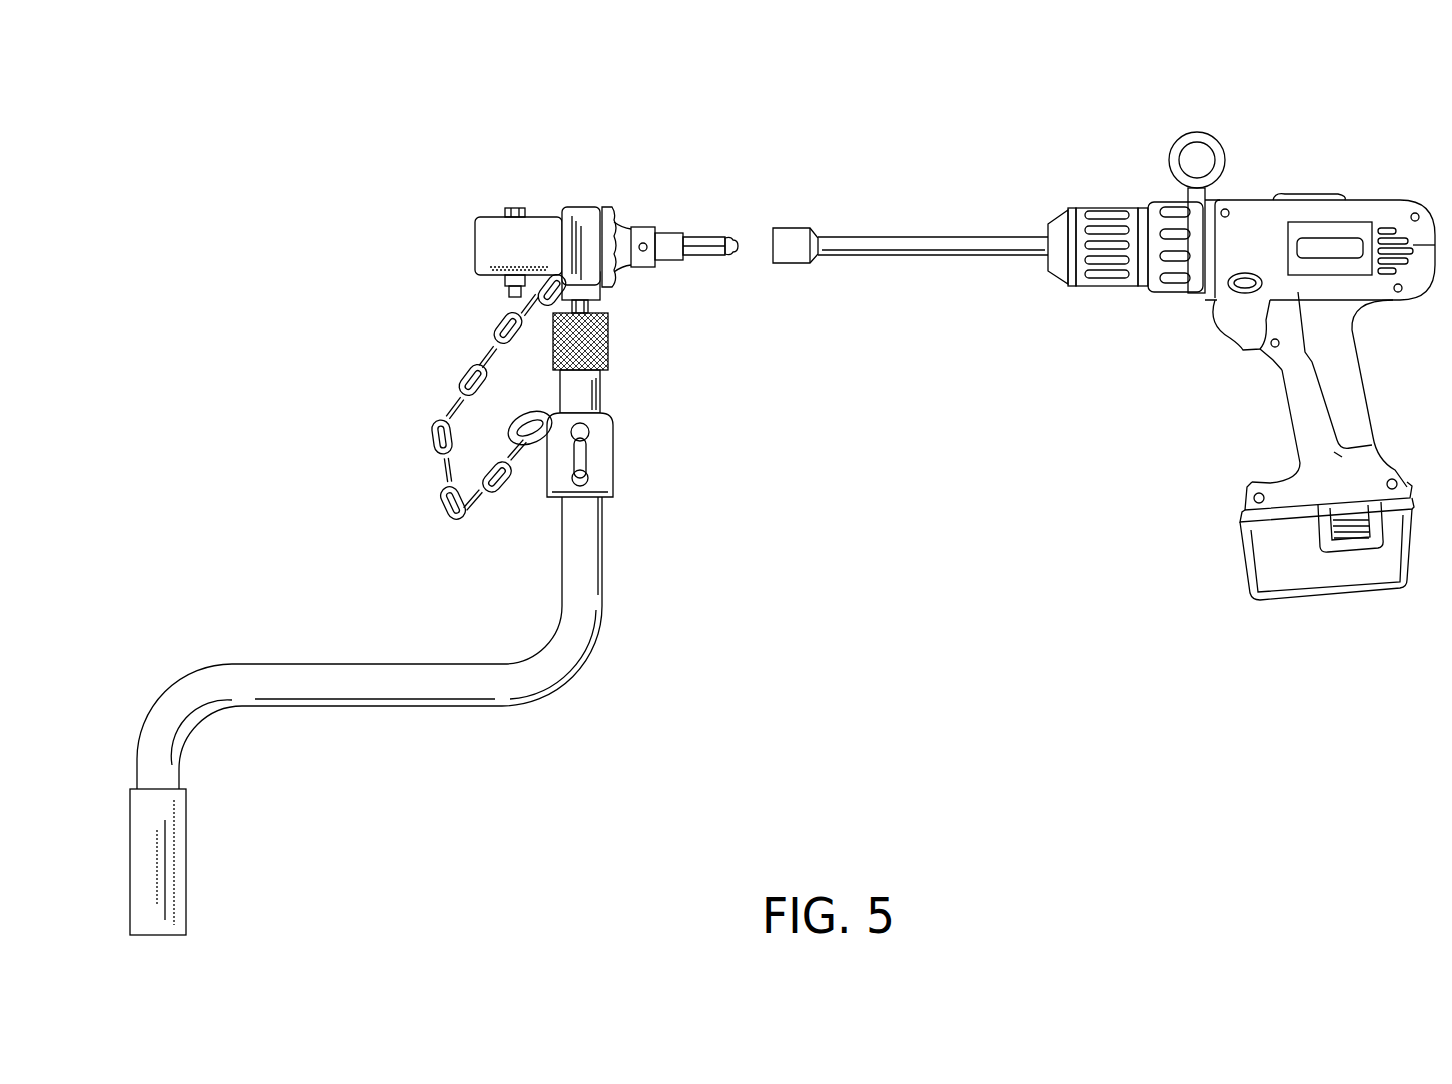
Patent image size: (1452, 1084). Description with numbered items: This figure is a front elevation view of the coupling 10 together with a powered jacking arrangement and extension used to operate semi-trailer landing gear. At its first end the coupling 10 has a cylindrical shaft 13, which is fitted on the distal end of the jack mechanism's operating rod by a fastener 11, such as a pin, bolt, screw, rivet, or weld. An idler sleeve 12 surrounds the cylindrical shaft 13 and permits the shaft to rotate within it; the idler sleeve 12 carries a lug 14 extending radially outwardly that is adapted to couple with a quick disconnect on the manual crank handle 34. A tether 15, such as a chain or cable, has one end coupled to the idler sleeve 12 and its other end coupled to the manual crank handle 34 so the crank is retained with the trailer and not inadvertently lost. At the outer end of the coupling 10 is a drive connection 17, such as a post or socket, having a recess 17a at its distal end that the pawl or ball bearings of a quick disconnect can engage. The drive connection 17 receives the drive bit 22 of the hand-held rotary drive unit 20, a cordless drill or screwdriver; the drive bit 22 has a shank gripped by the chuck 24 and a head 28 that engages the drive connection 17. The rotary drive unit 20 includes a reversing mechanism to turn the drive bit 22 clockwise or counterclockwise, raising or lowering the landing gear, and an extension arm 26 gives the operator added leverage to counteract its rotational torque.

The coupling 10 is at (448, 118).
The fastener 11 is at (503, 209).
The idler sleeve 12 is at (580, 213).
The cylindrical shaft 13 is at (488, 243).
The lug 14 is at (547, 306).
The tether 15 is at (438, 448).
The drive connection 17 is at (710, 253).
The recess 17a is at (727, 236).
The hand-held rotary drive unit 20 is at (1271, 645).
The drive bit 22 is at (928, 255).
The chuck 24 is at (1095, 263).
The extension arm 26 is at (1193, 162).
The head 28 is at (790, 233).
The manual crank handle 34 is at (577, 643).